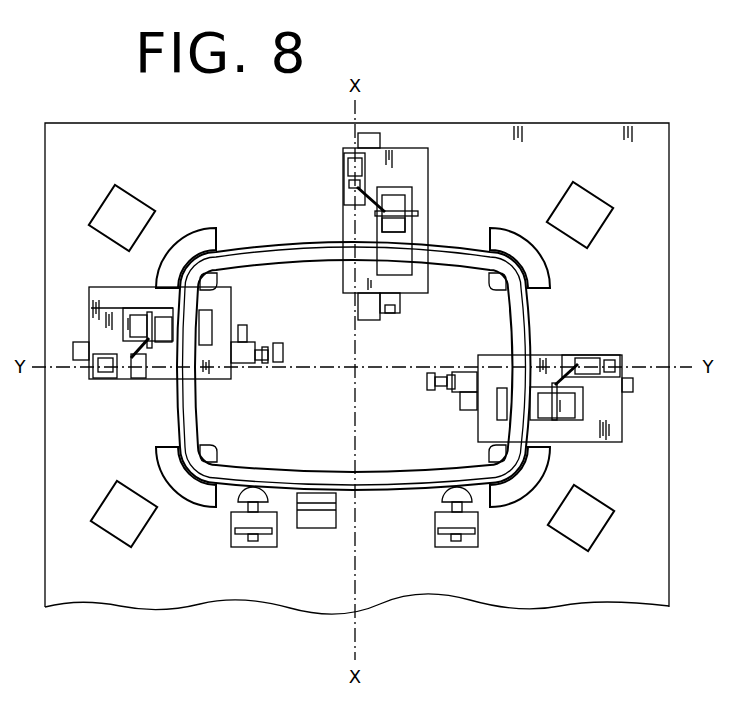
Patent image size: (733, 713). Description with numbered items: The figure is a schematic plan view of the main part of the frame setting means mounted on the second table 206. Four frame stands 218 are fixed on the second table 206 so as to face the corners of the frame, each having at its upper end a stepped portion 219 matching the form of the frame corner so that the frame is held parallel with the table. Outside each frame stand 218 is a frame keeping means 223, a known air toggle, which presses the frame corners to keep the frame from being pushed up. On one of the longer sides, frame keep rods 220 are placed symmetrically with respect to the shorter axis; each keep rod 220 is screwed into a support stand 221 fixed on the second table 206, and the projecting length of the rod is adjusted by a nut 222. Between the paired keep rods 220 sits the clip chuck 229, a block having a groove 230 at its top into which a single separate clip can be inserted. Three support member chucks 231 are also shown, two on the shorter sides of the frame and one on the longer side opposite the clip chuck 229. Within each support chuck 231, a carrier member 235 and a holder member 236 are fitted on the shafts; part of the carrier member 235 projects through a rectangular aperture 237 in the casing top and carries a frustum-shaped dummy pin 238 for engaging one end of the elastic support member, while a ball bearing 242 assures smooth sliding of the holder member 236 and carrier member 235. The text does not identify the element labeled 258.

The second table 206 is at (570, 123).
The frame stand 218 is at (192, 240).
The stepped portion 219 is at (212, 257).
The frame keep rod 220 is at (272, 506).
The support stand 221 is at (246, 547).
The nut 222 is at (236, 531).
The frame keeping means 223 is at (143, 207).
The clip chuck 229 is at (337, 525).
The groove 230 is at (337, 497).
The support member chuck 231 is at (424, 170).
The carrier member 235 is at (346, 173).
The holder member 236 is at (402, 201).
The rectangular aperture 237 is at (348, 201).
The dummy pin 238 is at (350, 185).
The ball bearing 242 is at (404, 236).
The adjusting screw 258 is at (284, 350).